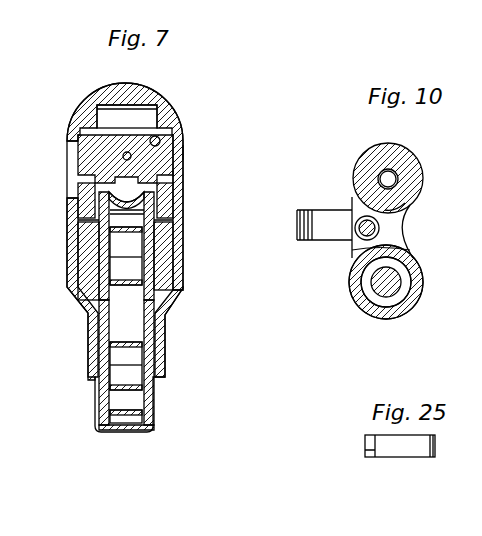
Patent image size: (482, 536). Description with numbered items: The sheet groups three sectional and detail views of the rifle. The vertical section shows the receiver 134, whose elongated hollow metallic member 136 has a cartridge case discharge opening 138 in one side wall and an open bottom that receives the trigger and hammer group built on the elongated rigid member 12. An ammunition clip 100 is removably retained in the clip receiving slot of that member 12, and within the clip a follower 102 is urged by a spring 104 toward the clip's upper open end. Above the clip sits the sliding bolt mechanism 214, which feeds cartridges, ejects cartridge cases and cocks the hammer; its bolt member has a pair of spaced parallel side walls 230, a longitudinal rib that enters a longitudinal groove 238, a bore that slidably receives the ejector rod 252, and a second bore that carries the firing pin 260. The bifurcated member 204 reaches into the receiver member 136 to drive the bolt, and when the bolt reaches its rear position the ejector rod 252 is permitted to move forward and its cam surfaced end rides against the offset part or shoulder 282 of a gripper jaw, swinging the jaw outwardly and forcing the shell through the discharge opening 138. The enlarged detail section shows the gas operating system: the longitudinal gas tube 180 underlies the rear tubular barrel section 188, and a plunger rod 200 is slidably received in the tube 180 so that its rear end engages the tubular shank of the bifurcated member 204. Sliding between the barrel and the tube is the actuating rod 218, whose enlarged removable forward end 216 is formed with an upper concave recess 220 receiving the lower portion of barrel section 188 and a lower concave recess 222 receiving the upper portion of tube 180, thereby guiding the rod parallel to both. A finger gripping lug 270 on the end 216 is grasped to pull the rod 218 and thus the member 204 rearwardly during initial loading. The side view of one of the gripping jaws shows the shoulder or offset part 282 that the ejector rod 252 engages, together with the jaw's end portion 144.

In FIG. 7, the elongated rigid member 12 is at (155, 351).
In FIG. 7, the ammunition clip 100 is at (103, 318).
In FIG. 7, the follower 102 is at (100, 217).
In FIG. 7, the spring 104 is at (117, 361).
In FIG. 7, the receiver 134 is at (186, 151).
In FIG. 7, the elongated hollow metallic member 136 is at (177, 178).
In FIG. 7, the cartridge case discharge opening 138 is at (72, 143).
In FIG. 7, the bifurcated member 204 is at (87, 271).
In FIG. 7, the sliding bolt mechanism 214 is at (92, 155).
In FIG. 7, the side walls 230 is at (85, 191).
In FIG. 7, the longitudinal groove 238 is at (134, 102).
In FIG. 7, the ejector rod 252 is at (161, 141).
In FIG. 7, the firing pin 260 is at (133, 141).
In FIG. 10, the gas tube 180 is at (414, 294).
In FIG. 10, the rear tubular barrel section 188 is at (412, 157).
In FIG. 10, the plunger rod 200 is at (381, 284).
In FIG. 10, the enlarged forward end 216 is at (390, 241).
In FIG. 10, the actuating rod 218 is at (357, 236).
In FIG. 10, the upper concave recess 220 is at (395, 214).
In FIG. 10, the lower concave recess 222 is at (360, 246).
In FIG. 10, the finger gripping lug 270 is at (316, 211).
In FIG. 25, the end wall 144 is at (426, 454).
In FIG. 25, the offset part 282 is at (376, 454).